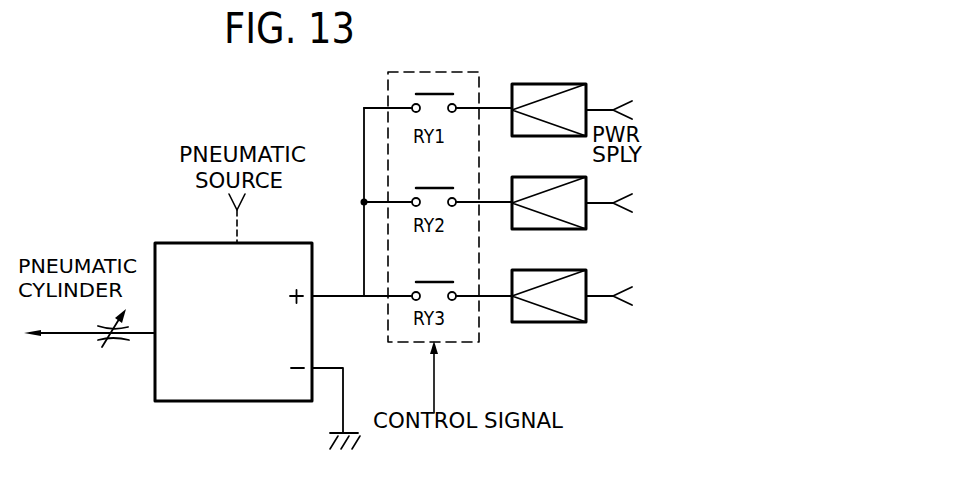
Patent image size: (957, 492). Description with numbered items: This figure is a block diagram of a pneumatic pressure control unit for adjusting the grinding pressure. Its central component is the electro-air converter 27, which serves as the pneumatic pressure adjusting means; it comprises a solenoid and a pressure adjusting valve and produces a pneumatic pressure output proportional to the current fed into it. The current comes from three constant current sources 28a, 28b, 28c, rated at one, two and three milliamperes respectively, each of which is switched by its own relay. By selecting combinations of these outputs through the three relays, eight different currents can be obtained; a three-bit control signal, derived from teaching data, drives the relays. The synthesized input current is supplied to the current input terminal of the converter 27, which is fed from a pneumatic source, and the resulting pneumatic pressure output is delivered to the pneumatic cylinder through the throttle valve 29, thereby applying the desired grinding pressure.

The electro-air converter 27 is at (243, 392).
The constant current source 28a is at (577, 102).
The constant current source 28b is at (535, 182).
The constant current source 28c is at (530, 280).
The throttle valve 29 is at (113, 348).